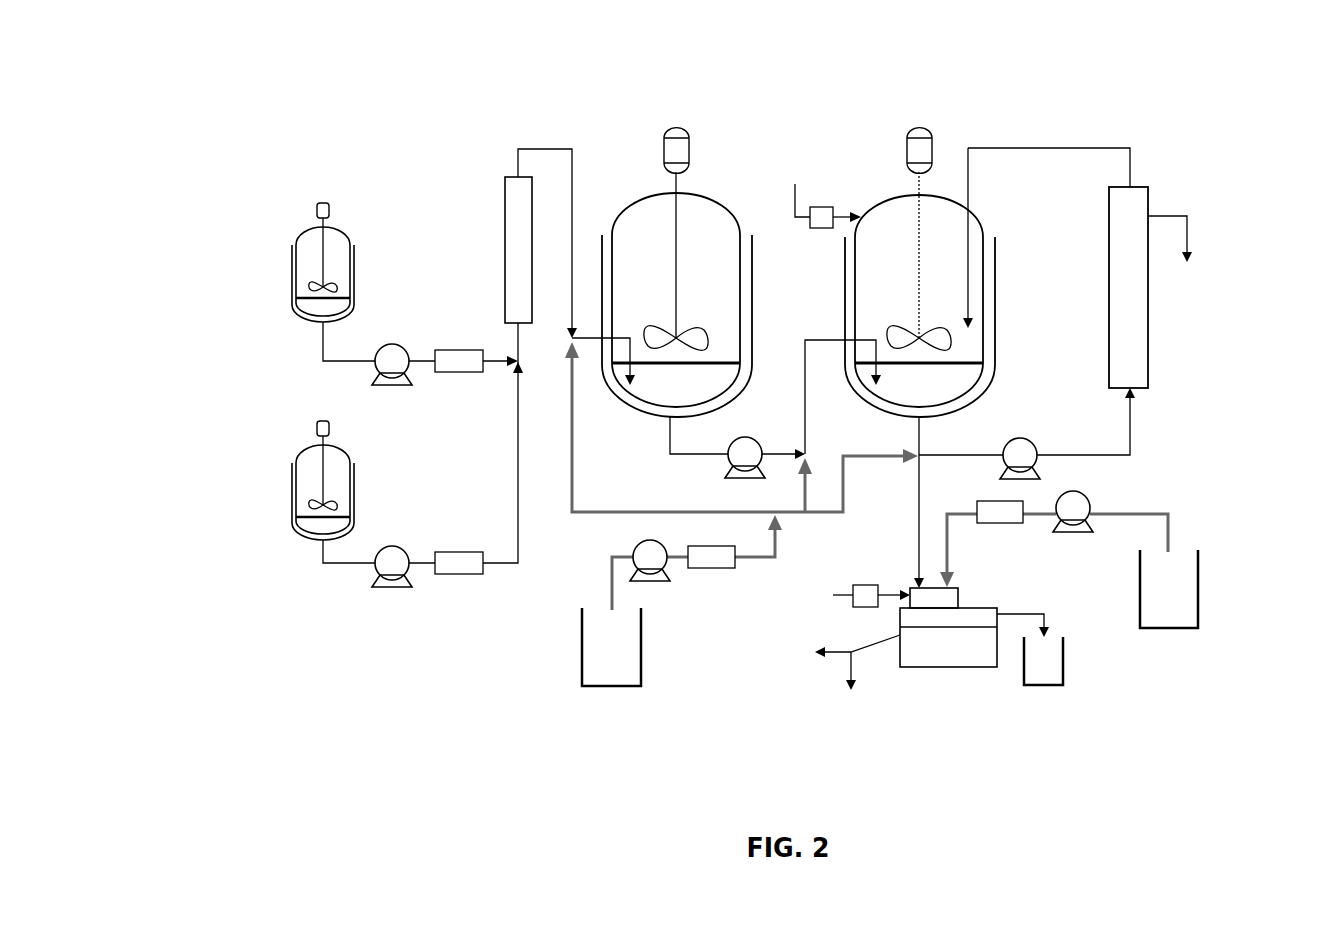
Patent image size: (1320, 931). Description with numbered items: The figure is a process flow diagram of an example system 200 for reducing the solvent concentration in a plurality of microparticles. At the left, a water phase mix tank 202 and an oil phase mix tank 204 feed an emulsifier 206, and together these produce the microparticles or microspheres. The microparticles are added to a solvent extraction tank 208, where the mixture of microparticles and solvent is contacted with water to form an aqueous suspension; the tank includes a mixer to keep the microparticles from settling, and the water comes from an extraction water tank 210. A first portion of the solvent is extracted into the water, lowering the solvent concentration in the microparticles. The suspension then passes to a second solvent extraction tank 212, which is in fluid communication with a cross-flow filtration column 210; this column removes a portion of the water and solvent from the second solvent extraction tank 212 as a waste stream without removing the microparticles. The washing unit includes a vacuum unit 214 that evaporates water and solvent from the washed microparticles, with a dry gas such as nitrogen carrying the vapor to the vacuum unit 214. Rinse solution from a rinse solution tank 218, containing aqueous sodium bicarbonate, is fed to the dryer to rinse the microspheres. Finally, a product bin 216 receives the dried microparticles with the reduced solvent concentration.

The system 200 is at (300, 104).
The water phase mix tank 202 is at (300, 456).
The oil phase mix tank 204 is at (300, 232).
The emulsifier 206 is at (505, 200).
The solvent extraction tank 208 is at (650, 196).
The extraction water tank / cross-flow filtration column 210 is at (1109, 247).
The second solvent extraction tank 212 is at (898, 196).
The vacuum unit 214 is at (910, 588).
The product bin 216 is at (1063, 638).
The rinse solution tank 218 is at (1198, 552).